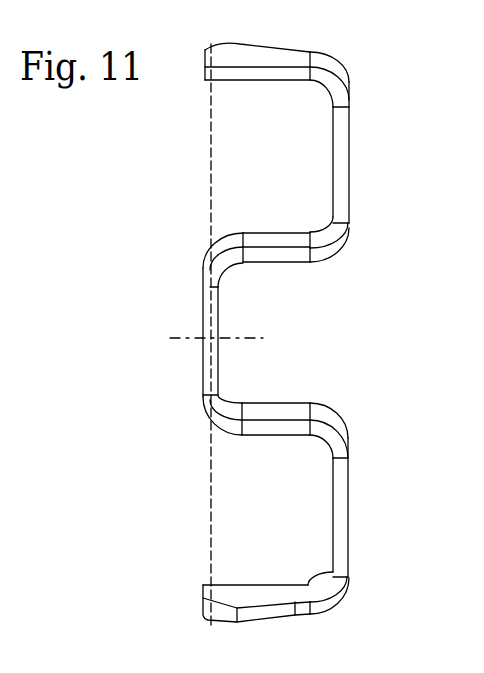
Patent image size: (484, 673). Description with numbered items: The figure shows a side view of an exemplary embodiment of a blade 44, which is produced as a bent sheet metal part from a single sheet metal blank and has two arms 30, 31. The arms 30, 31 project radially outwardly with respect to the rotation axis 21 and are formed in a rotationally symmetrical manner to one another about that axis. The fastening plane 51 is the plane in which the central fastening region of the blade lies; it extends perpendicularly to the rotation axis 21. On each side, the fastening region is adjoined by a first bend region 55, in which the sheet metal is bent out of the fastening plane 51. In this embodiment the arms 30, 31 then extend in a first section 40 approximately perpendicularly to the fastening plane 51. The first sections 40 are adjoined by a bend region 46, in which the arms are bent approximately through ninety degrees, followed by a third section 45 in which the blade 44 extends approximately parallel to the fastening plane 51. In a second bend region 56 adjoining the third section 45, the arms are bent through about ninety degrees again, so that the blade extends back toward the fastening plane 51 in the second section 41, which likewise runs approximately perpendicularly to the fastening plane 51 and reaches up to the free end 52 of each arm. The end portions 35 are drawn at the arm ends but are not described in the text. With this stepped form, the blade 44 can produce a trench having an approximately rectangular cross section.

The rotation axis 21 is at (177, 338).
The arm 30 is at (368, 493).
The arm 31 is at (392, 210).
The end portion 35 is at (238, 44).
The first section 40 is at (270, 253).
The second section 41 is at (290, 58).
The blade 44 is at (382, 87).
The third section 45 is at (342, 170).
The bend region 46 is at (335, 243).
The fastening plane 51 is at (210, 190).
The free end 52 is at (205, 67).
The first bend region 55 is at (217, 267).
The second bend region 56 is at (333, 67).